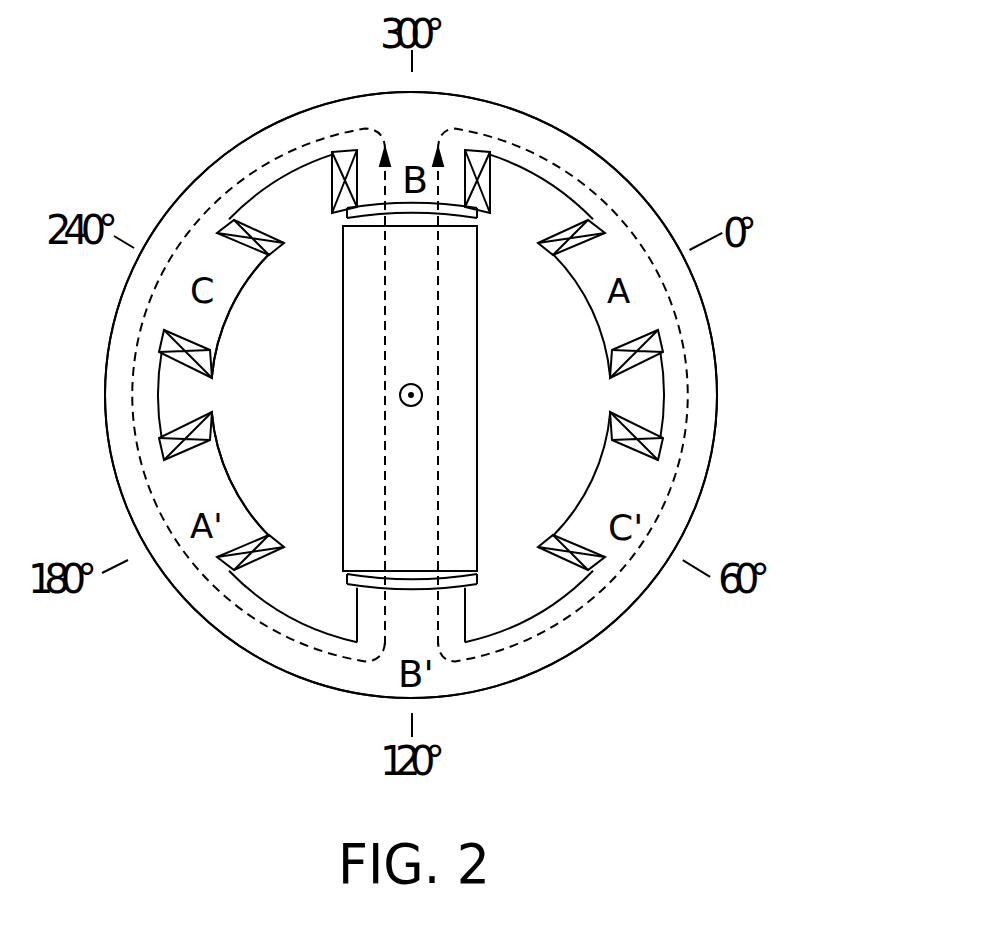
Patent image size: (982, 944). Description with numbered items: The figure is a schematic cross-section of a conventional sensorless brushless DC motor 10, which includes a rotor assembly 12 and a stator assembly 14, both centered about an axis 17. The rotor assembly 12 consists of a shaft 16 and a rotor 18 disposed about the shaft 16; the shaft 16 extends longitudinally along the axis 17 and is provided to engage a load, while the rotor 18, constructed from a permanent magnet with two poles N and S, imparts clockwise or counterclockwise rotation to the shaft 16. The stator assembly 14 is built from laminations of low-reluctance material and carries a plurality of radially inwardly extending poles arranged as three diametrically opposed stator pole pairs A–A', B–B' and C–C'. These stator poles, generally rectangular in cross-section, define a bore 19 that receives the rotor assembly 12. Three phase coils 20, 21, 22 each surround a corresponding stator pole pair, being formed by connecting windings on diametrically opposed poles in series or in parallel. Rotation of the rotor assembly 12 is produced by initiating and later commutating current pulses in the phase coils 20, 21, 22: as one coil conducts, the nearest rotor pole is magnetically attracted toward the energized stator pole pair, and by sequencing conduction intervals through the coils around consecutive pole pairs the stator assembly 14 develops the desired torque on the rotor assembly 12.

The sensorless brushless DC motor 10 is at (748, 148).
The rotor assembly 12 is at (455, 404).
The stator assembly 14 is at (594, 153).
The shaft 16 is at (412, 384).
The axis 17 is at (412, 406).
The rotor 18 is at (478, 450).
The bore 19 is at (304, 395).
The phase coil 20 is at (657, 340).
The phase coil 21 is at (488, 152).
The phase coil 22 is at (233, 221).